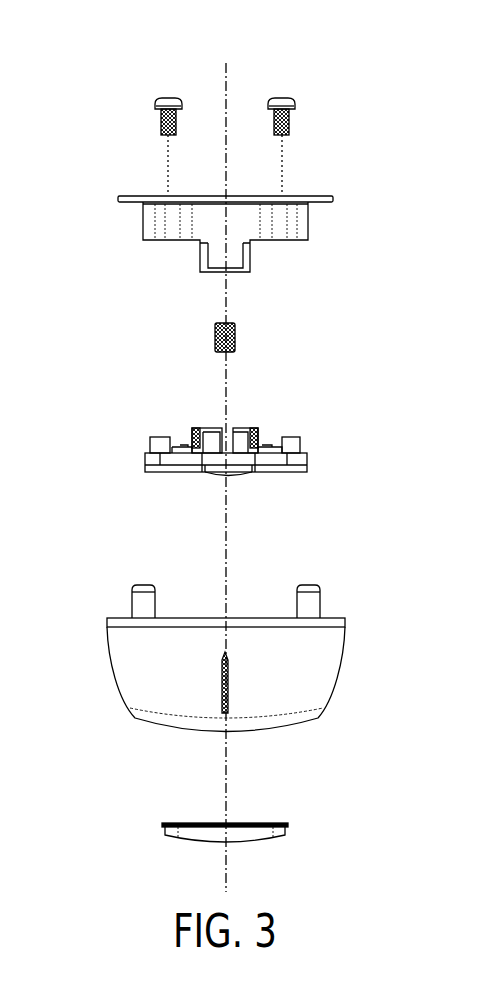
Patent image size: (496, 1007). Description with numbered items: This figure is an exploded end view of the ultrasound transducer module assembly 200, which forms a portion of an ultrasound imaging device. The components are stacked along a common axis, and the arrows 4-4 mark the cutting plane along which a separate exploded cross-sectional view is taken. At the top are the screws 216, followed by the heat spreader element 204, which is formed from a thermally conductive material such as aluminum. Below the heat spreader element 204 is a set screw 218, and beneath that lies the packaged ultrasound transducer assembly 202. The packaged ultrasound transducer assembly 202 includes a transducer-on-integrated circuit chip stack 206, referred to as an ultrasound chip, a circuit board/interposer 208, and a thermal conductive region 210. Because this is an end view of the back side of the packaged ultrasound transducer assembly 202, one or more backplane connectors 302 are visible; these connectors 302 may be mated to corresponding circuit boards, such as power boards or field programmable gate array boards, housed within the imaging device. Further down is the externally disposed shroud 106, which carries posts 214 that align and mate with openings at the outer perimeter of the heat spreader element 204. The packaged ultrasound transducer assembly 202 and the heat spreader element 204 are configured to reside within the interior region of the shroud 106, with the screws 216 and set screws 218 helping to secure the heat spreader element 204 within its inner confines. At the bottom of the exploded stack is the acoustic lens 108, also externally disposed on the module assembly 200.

The arrows 4- 4 is at (227, 75).
The shroud 106 is at (128, 670).
The acoustic lens 108 is at (168, 833).
The ultrasound transducer module assembly 200 is at (110, 108).
The packaged ultrasound transducer assembly 202 is at (125, 450).
The heat spreader element 204 is at (153, 225).
The transducer-on-integrated circuit chip stack 206 is at (209, 473).
The circuit board/interposer 208 is at (300, 456).
The thermal conductive region 210 is at (243, 474).
The posts 214 is at (310, 612).
The screws 216 is at (290, 100).
The set screws 218 is at (235, 335).
The backplane connectors 302 is at (253, 427).